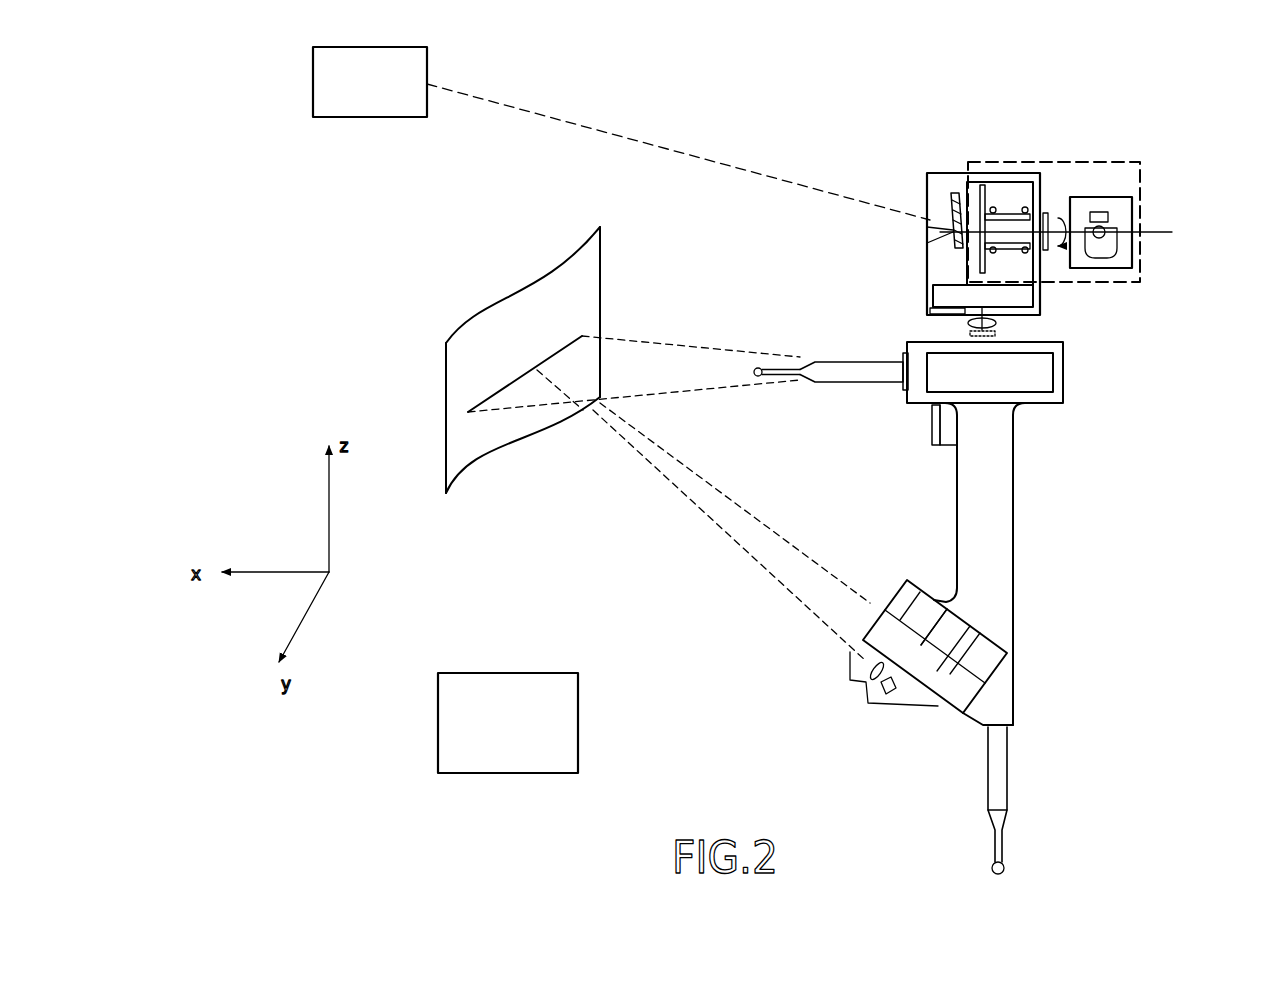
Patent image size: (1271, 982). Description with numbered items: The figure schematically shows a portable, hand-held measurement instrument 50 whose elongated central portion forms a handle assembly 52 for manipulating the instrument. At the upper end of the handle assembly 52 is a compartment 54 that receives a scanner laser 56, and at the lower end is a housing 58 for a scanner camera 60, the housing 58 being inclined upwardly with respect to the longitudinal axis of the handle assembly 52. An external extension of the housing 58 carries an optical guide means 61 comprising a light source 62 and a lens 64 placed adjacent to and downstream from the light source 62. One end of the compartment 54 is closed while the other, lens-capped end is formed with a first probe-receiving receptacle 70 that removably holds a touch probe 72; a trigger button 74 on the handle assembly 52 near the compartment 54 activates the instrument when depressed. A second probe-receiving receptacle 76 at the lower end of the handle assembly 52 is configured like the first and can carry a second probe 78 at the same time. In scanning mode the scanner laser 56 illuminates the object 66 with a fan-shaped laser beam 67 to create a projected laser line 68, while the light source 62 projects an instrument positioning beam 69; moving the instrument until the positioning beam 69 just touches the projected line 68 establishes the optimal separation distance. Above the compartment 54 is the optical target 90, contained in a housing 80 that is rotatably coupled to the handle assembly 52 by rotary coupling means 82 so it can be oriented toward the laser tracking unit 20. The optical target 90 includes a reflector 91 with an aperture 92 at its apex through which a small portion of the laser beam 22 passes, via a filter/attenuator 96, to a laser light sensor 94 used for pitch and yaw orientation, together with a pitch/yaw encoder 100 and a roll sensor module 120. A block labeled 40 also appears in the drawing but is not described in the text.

The laser tracking unit 20 is at (373, 118).
The laser beam 22 is at (633, 137).
The table 40 is at (524, 731).
The measurement instrument 50 is at (1162, 416).
The handle assembly 52 is at (988, 536).
The scanner laser compartment 54 is at (1063, 372).
The scanner laser 56 is at (1053, 385).
The housing 58 is at (907, 578).
The scanner camera 60 is at (958, 635).
The optical guide means 61 is at (854, 728).
The light source 62 is at (878, 691).
The lens 64 is at (866, 670).
The object 66 is at (542, 292).
The fan-shaped laser beam 67 is at (688, 345).
The projected laser line 68 is at (507, 383).
The instrument positioning beam 69 is at (740, 560).
The first probe-receiving receptacle 70 is at (908, 342).
The touch probe 72 is at (851, 381).
The trigger button 74 is at (933, 428).
The second probe-receiving receptacle 76 is at (1000, 705).
The second probe 78 is at (1003, 771).
The housing 80 is at (1025, 162).
The rotary coupling means 82 is at (1022, 325).
The optical target 90 is at (872, 232).
The reflector 91 is at (927, 217).
The aperture 92 is at (947, 230).
The laser light sensor 94 is at (965, 220).
The filter/attenuator 96 is at (950, 228).
The pitch/yaw encoder 100 is at (935, 291).
The roll sensor module 120 is at (1143, 238).